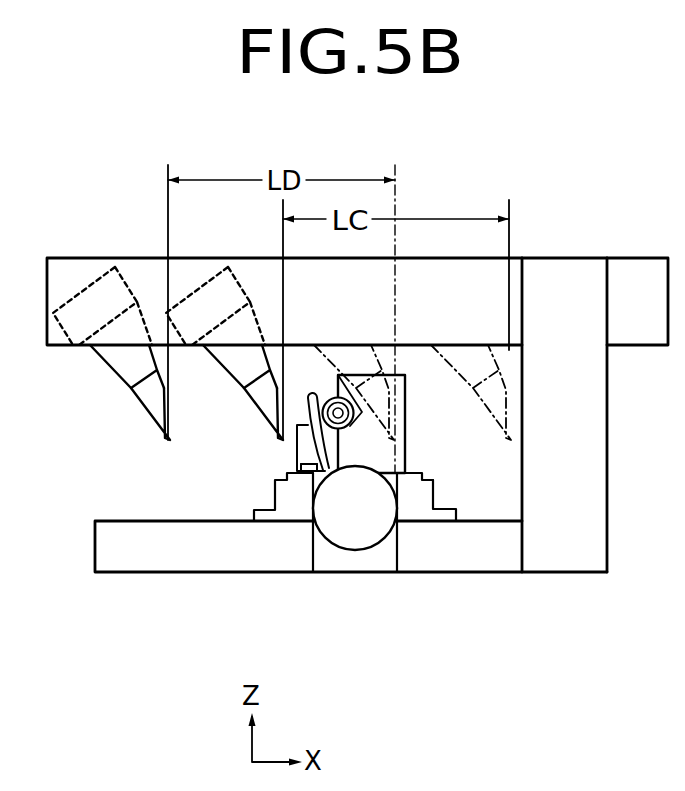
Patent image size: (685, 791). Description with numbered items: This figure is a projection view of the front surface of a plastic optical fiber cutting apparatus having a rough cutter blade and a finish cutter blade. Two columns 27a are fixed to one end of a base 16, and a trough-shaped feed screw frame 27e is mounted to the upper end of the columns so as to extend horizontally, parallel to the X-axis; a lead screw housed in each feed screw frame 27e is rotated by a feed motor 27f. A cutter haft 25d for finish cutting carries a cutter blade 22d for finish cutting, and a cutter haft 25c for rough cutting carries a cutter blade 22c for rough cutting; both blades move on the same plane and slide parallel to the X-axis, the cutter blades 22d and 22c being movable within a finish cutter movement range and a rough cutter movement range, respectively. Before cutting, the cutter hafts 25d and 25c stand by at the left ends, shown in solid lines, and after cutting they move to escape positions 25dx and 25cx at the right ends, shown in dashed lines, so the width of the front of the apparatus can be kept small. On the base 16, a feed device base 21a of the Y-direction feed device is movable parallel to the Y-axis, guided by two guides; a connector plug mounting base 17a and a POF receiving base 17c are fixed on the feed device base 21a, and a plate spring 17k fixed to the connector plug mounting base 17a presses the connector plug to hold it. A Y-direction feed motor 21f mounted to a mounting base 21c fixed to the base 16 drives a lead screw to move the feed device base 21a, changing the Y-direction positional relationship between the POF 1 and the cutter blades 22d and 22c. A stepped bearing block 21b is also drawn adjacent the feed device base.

The POF 1 is at (336, 396).
The base 16 is at (108, 574).
The connector plug mounting base 17a is at (405, 425).
The POF receiving base 17c is at (297, 453).
The plate spring 17k is at (297, 427).
The feed device base 21a is at (412, 512).
The stepped bearing block 21b is at (265, 518).
The mounting base 21c is at (310, 555).
The Y-direction feed motor 21f is at (367, 548).
The cutter blade for rough cutting 22c is at (260, 413).
The cutter blade for finish cutting 22d is at (150, 414).
The cutter haft for rough cutting 25c is at (210, 363).
The escape position of the cutter haft for rough cutting 25cx is at (520, 362).
The cutter haft for finish cutting 25d is at (107, 357).
The escape position of the cutter haft for finish cutting 25dx is at (386, 372).
The column 27a is at (592, 456).
The feed screw frame 27e is at (97, 258).
The feed motor 27f is at (638, 258).